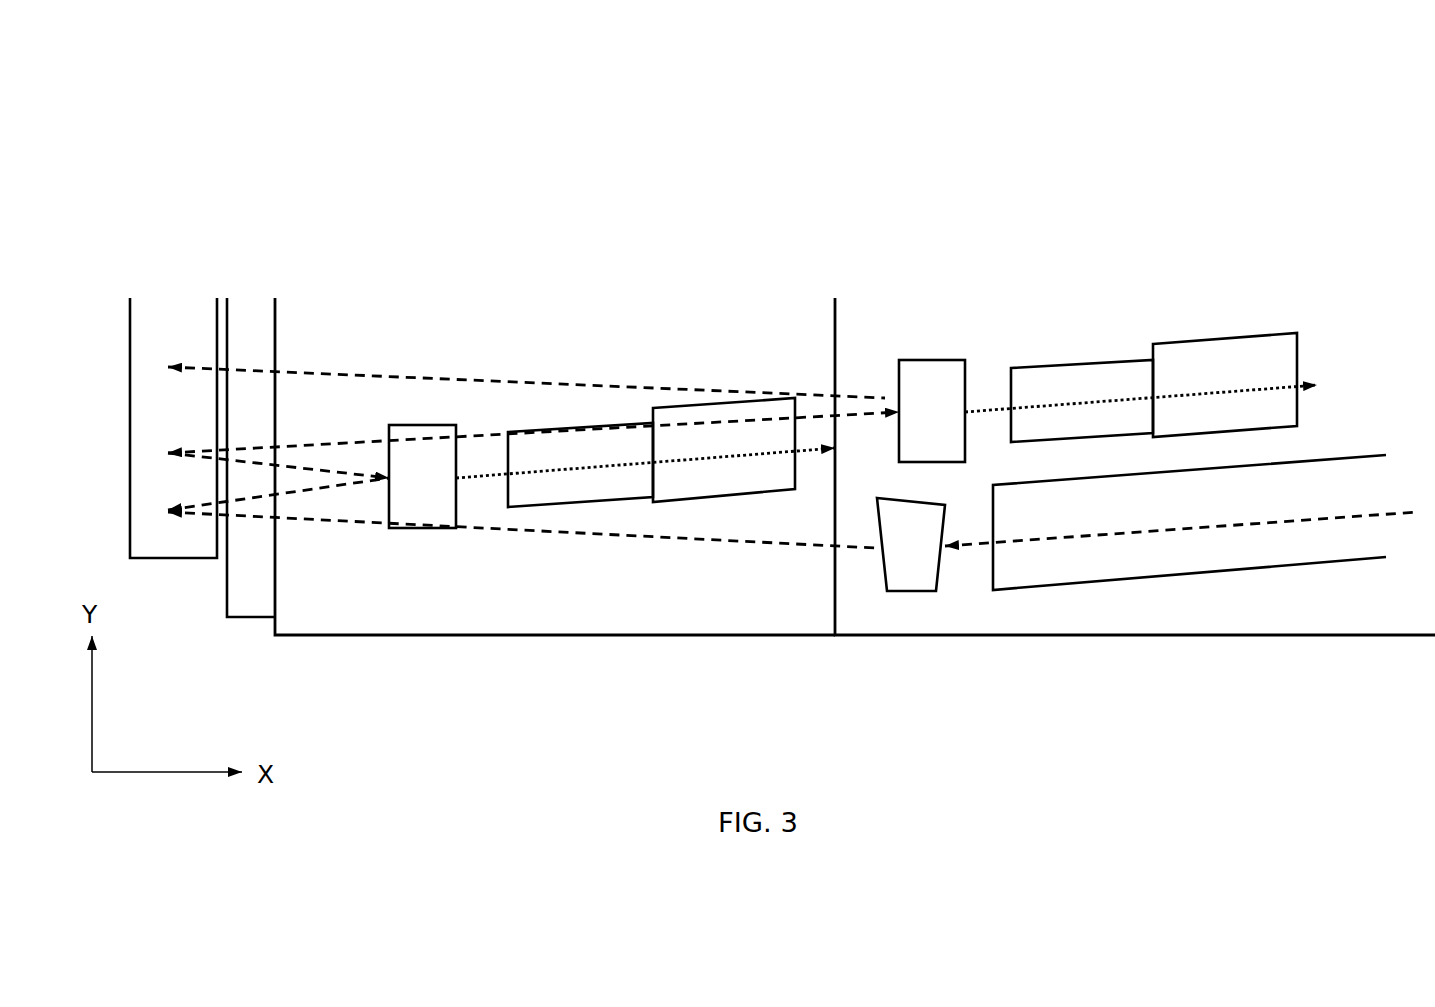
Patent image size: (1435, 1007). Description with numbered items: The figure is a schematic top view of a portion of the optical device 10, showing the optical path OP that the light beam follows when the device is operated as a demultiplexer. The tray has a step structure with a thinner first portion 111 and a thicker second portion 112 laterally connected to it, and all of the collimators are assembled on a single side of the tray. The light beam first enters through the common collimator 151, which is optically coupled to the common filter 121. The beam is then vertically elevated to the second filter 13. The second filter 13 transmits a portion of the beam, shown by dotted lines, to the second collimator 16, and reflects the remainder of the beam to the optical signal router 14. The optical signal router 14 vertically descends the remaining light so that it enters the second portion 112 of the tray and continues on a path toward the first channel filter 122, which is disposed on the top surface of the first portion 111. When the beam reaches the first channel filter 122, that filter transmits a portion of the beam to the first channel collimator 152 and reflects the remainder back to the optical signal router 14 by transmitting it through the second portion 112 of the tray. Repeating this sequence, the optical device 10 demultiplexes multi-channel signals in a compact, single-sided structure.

The optical device 10 is at (193, 98).
The optical signal router 14 is at (177, 318).
The second filter 13 is at (422, 425).
The second collimator 16 is at (670, 408).
The second portion 112 is at (487, 603).
The first portion 111 is at (1063, 608).
The first channel filter 122 is at (925, 358).
The first channel collimator 152 is at (1175, 342).
The common filter 121 is at (916, 593).
The common collimator 151 is at (1170, 575).
The optical path OP is at (792, 443).